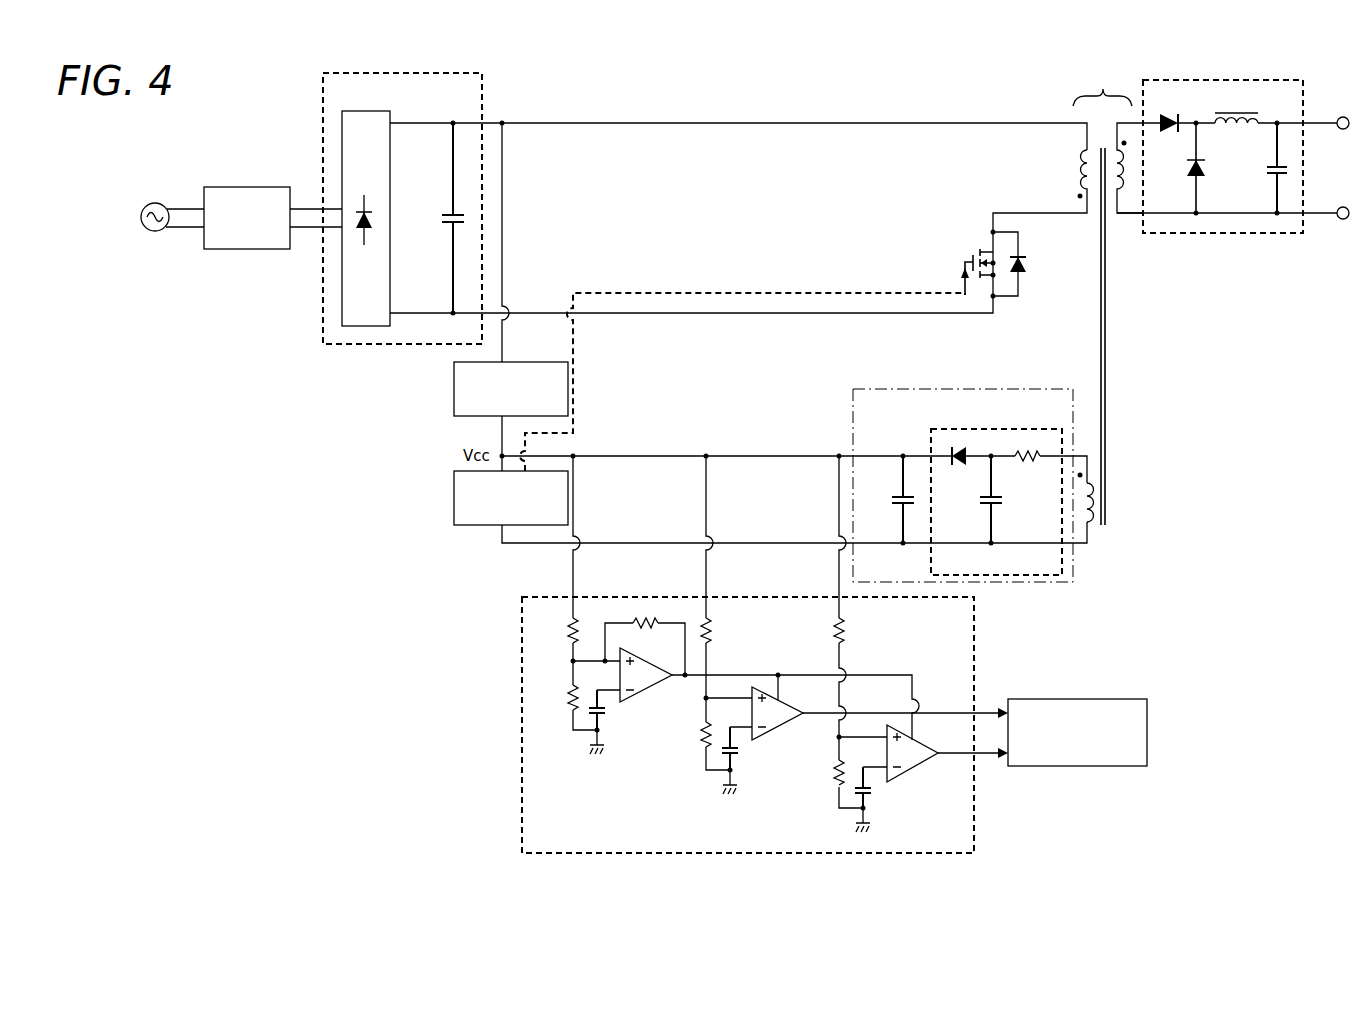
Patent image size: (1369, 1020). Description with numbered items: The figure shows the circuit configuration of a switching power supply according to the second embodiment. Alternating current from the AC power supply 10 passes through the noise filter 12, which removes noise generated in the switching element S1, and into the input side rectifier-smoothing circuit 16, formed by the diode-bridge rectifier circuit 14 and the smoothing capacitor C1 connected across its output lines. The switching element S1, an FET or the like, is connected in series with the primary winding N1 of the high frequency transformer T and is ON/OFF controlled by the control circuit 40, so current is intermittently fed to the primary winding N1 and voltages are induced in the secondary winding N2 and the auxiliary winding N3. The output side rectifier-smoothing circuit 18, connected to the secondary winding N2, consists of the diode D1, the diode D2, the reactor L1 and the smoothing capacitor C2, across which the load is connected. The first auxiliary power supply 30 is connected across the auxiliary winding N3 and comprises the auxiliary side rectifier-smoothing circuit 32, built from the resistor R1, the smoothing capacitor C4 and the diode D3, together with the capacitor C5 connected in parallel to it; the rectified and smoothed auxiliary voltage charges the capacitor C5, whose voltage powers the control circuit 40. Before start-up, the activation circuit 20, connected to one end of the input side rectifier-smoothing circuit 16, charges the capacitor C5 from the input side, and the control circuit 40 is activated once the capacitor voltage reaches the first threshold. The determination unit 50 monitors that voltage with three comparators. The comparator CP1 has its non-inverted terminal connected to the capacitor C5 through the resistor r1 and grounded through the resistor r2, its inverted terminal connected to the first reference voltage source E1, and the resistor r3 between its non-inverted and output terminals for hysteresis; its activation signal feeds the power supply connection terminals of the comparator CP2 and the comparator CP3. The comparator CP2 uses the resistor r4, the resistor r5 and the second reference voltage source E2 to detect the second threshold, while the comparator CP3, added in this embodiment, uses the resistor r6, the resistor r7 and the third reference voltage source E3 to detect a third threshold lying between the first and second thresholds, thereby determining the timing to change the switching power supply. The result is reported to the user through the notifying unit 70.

The AC power supply 10 is at (158, 203).
The noise filter 12 is at (252, 187).
The rectifier circuit 14 is at (369, 111).
The input side rectifier-smoothing circuit 16 is at (442, 75).
The output side rectifier-smoothing circuit 18 is at (1262, 235).
The activation circuit 20 is at (454, 391).
The first auxiliary power supply 30 is at (965, 390).
The auxiliary side rectifier-smoothing circuit 32 is at (1033, 580).
The control circuit 40 is at (454, 501).
The determination unit 50 is at (520, 822).
The notifying unit 70 is at (1047, 699).
The smoothing capacitor C1 is at (442, 216).
The smoothing capacitor C2 is at (1267, 176).
The smoothing capacitor C4 is at (1002, 506).
The capacitor C5 is at (892, 507).
The diode D1 is at (1170, 118).
The diode D2 is at (1188, 180).
The diode D3 is at (953, 448).
The reactor L1 is at (1240, 136).
The high frequency transformer T is at (1102, 295).
The primary winding N1 is at (1081, 170).
The secondary winding N2 is at (1116, 148).
The auxiliary winding N3 is at (1091, 530).
The switching element S1 is at (1021, 280).
The resistor R1 is at (1032, 450).
The resistor r1 is at (568, 632).
The resistor r2 is at (568, 699).
The resistor r3 is at (650, 628).
The resistor r4 is at (716, 632).
The resistor r5 is at (706, 737).
The resistor r6 is at (849, 632).
The resistor r7 is at (834, 774).
The comparator CP1 is at (650, 692).
The comparator CP2 is at (782, 728).
The comparator CP3 is at (917, 770).
The first reference voltage source E1 is at (608, 715).
The second reference voltage source E2 is at (740, 748).
The third reference voltage source E3 is at (873, 795).